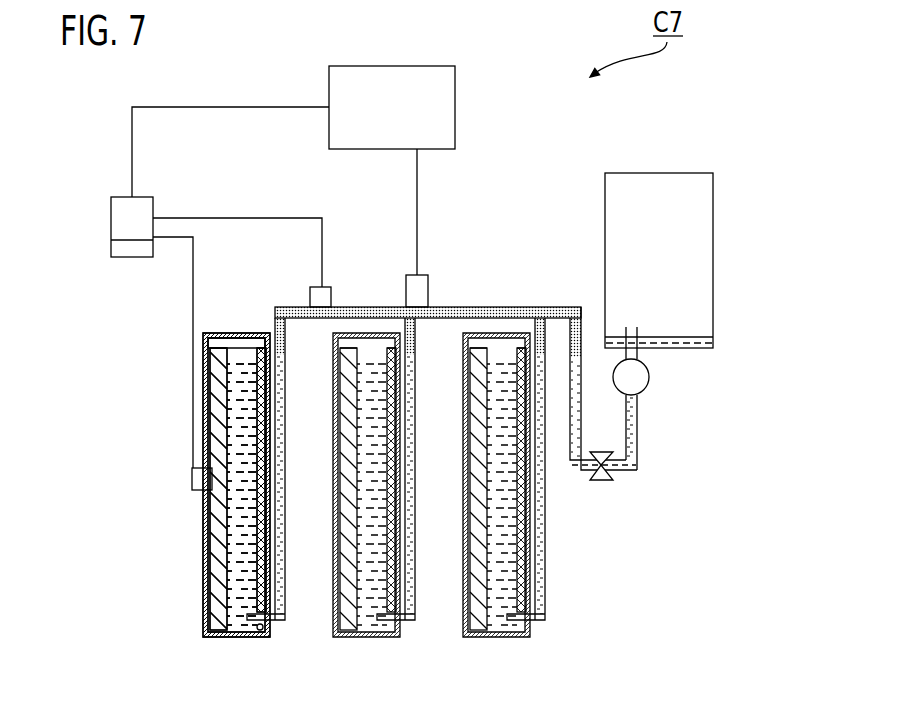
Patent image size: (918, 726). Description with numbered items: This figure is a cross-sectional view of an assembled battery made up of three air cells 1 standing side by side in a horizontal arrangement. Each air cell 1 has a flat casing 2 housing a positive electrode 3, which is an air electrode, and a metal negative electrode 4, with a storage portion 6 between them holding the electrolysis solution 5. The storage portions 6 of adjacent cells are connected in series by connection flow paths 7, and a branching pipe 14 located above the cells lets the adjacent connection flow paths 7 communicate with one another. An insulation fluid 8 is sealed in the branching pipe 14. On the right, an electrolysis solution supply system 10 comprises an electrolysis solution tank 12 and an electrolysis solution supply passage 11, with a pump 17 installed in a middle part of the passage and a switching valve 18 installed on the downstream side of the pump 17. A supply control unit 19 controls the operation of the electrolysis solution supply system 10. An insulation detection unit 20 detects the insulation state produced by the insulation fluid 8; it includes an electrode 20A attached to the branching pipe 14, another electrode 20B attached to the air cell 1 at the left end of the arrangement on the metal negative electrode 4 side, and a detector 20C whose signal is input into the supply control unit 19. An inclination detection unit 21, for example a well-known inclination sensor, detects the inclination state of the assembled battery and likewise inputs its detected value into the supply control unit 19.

The air cell 1 is at (456, 495).
The flat casing 2 is at (204, 388).
The positive electrode 3 is at (255, 520).
The metal negative electrode 4 is at (218, 553).
The electrolysis solution 5 is at (238, 590).
The storage portion 6 is at (240, 350).
The connection flow path 7 is at (287, 558).
The insulation fluid 8 is at (385, 312).
The electrolysis solution supply system 10 is at (697, 226).
The electrolysis solution supply passage 11 is at (638, 452).
The electrolysis solution tank 12 is at (713, 208).
The branching pipe 14 is at (528, 312).
The pump 17 is at (651, 378).
The switching valve 18 is at (603, 485).
The supply control unit 19 is at (456, 77).
The insulation detection unit 20 is at (112, 182).
The electrode 20A is at (320, 297).
The electrode 20B is at (200, 480).
The detector 20C is at (127, 258).
The inclination detection unit 21 is at (418, 292).